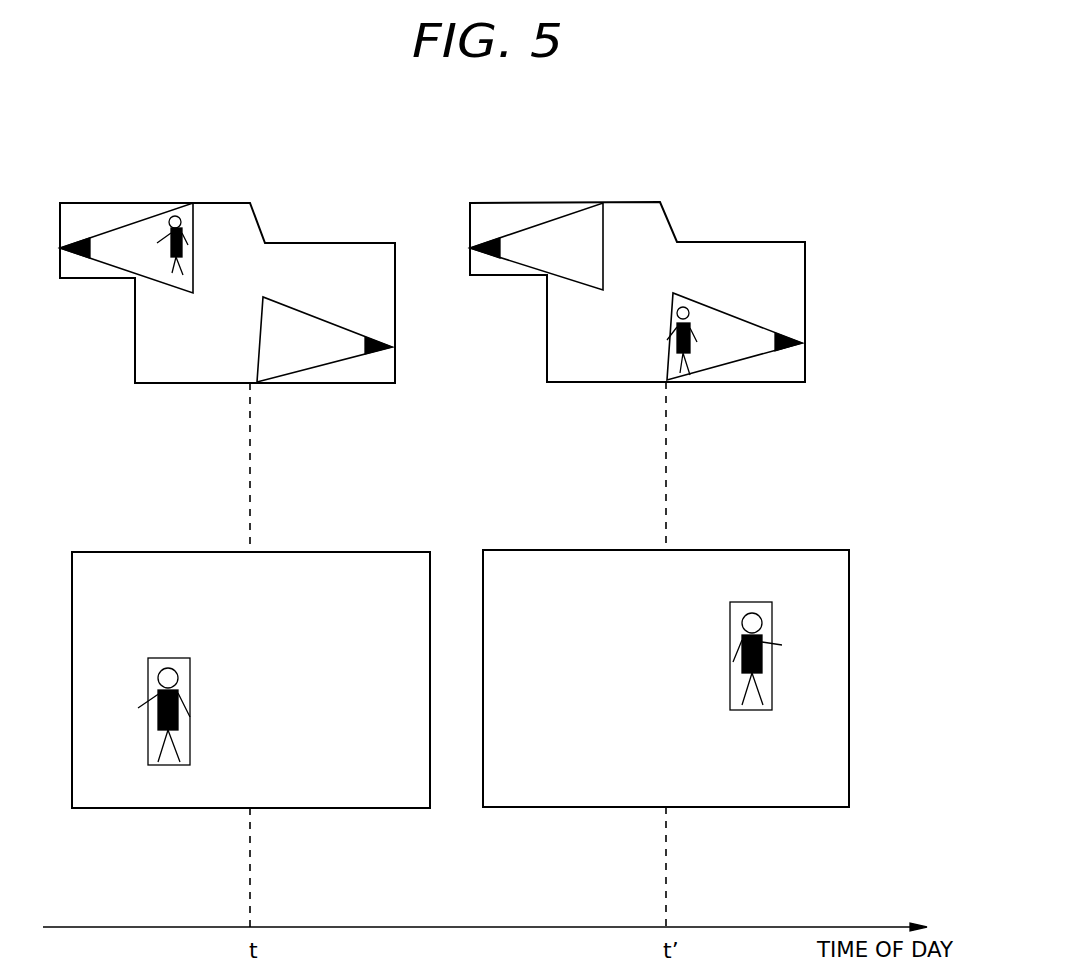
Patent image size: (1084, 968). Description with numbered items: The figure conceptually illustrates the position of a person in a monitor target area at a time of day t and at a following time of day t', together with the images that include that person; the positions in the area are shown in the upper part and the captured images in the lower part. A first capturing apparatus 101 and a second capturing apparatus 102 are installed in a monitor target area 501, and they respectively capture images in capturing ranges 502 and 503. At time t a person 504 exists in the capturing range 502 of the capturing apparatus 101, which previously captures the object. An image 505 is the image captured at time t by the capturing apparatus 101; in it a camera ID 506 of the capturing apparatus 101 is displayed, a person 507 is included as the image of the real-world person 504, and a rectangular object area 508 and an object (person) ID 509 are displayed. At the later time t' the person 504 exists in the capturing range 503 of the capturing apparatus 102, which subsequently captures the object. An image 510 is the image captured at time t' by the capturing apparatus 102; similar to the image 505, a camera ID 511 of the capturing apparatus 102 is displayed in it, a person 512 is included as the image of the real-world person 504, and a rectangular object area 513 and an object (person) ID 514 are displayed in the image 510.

The capturing apparatus 101 is at (68, 258).
The capturing apparatus 102 is at (380, 357).
The monitor target area 501 is at (333, 241).
The capturing range 502 is at (133, 223).
The capturing range 503 is at (318, 318).
The person 504 is at (192, 253).
The image 505 is at (148, 552).
The camera ID 506 is at (333, 545).
The person 507 is at (178, 722).
The rectangular object area 508 is at (192, 677).
The object ID 509 is at (278, 787).
The image 510 is at (560, 549).
The camera ID 511 is at (849, 561).
The person 512 is at (742, 665).
The rectangular object area 513 is at (729, 620).
The object ID 514 is at (606, 748).